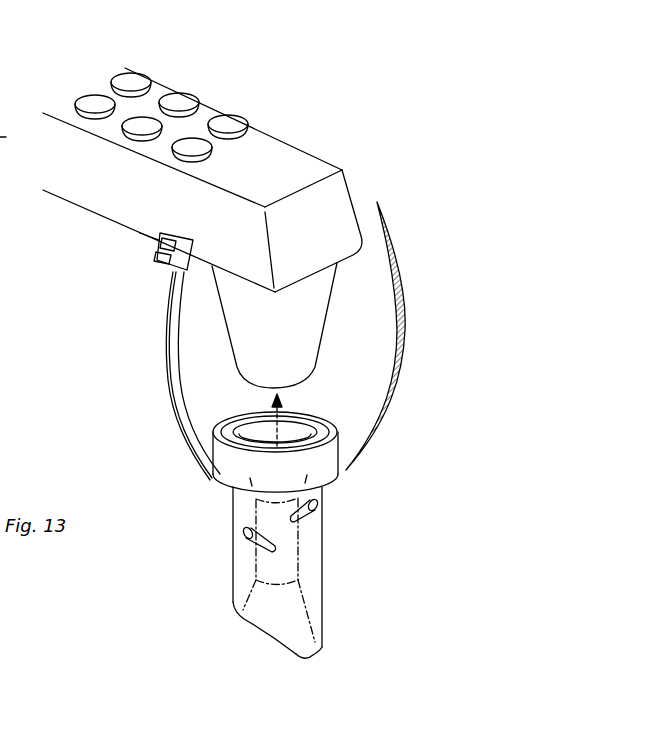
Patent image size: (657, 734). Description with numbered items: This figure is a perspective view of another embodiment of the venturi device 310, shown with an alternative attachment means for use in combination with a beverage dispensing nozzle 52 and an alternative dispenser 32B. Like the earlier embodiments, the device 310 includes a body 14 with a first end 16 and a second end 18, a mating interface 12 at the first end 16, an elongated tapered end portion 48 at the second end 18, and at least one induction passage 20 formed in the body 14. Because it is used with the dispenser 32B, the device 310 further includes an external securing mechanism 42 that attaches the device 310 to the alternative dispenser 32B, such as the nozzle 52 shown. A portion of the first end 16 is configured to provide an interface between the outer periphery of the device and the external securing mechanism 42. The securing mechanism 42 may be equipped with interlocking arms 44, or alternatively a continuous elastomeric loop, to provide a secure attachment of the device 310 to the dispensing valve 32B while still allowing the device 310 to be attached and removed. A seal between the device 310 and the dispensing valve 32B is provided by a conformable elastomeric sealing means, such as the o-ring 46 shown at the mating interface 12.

The beverage dispensing nozzle 52 is at (278, 150).
The interlocking arms 44 is at (252, 336).
The securing mechanism 42 is at (170, 382).
The alternative dispenser 32B is at (310, 307).
The o-ring 46 is at (255, 430).
The first end 16 is at (305, 432).
The mating interface 12 is at (235, 436).
The induction passage 20 is at (317, 507).
The body 14 is at (295, 592).
The device 310 is at (248, 539).
The second end 18 is at (250, 623).
The elongated tapered end portion 48 is at (307, 662).